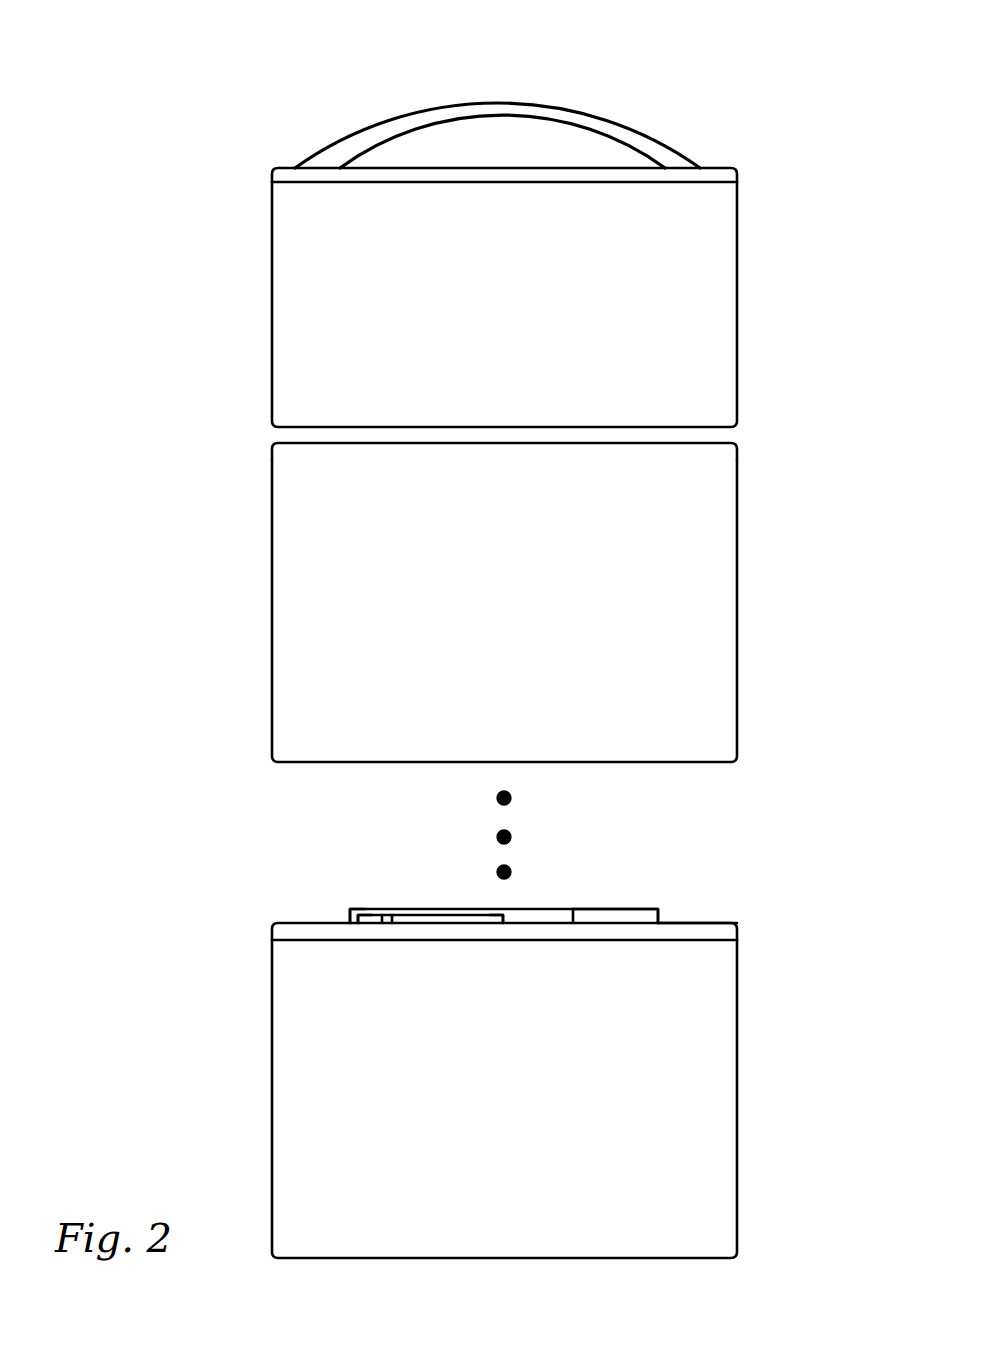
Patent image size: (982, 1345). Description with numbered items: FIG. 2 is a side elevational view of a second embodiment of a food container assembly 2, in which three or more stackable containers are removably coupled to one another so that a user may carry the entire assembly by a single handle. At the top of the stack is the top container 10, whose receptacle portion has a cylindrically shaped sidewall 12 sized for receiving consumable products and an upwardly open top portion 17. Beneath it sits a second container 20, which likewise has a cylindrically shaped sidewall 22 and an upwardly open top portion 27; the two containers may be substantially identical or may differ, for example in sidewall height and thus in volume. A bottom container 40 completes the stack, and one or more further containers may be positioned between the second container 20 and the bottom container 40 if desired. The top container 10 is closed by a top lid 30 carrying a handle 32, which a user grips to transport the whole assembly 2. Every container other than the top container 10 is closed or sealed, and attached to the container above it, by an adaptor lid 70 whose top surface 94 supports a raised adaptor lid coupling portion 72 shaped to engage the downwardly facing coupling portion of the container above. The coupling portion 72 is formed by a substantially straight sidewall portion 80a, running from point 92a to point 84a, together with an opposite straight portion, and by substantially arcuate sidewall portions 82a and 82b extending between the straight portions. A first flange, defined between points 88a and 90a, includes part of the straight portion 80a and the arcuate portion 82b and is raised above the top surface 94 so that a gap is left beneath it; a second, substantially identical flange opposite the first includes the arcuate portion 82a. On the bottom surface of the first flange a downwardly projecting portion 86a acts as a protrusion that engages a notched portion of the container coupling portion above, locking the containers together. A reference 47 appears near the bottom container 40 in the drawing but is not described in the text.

The food container assembly 2 is at (169, 142).
The top container 10 is at (147, 358).
The cylindrically shaped sidewall 12 is at (714, 320).
The upwardly open top portion 17 is at (290, 169).
The bottom container 20 is at (147, 601).
The cylindrically shaped sidewall 22 is at (714, 627).
The upwardly open top portion 27 is at (284, 438).
The top lid 30 is at (700, 116).
The handle 32 is at (505, 103).
The bottom container 40 is at (147, 1103).
The base top cap 47 is at (285, 930).
The adaptor lid 70 is at (703, 836).
The adaptor lid coupling portion 72 is at (607, 859).
The substantially straight sidewall portion 80a is at (550, 915).
The substantially arcuate sidewall portion 82a is at (628, 917).
The substantially arcuate sidewall portion 82b is at (347, 918).
The point 84a is at (435, 909).
The downwardly projecting portion 86a is at (382, 924).
The point 88a is at (503, 924).
The point 90a is at (358, 924).
The point 92a is at (573, 924).
The top surface 94 is at (679, 923).